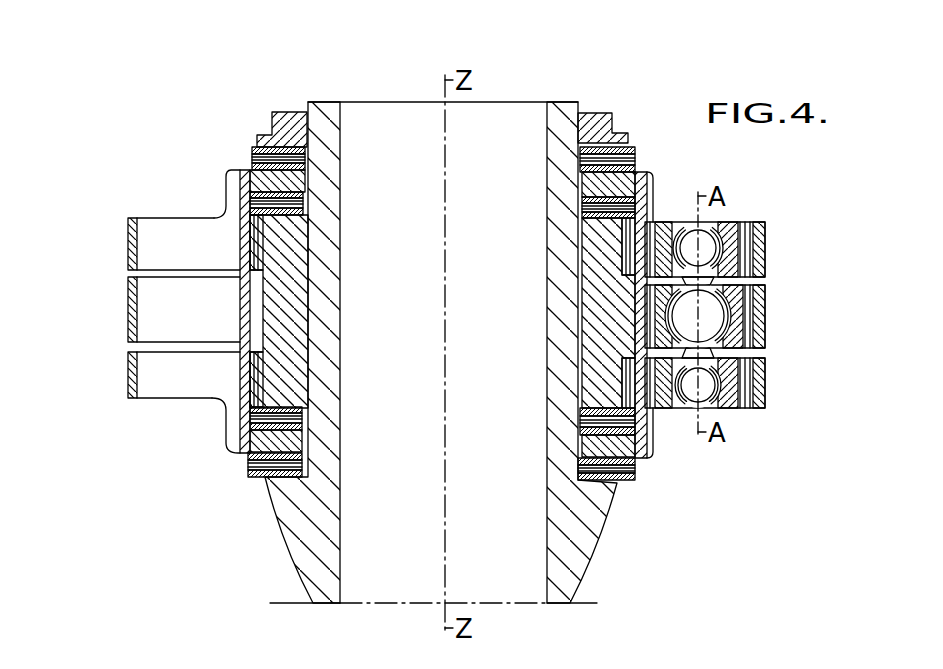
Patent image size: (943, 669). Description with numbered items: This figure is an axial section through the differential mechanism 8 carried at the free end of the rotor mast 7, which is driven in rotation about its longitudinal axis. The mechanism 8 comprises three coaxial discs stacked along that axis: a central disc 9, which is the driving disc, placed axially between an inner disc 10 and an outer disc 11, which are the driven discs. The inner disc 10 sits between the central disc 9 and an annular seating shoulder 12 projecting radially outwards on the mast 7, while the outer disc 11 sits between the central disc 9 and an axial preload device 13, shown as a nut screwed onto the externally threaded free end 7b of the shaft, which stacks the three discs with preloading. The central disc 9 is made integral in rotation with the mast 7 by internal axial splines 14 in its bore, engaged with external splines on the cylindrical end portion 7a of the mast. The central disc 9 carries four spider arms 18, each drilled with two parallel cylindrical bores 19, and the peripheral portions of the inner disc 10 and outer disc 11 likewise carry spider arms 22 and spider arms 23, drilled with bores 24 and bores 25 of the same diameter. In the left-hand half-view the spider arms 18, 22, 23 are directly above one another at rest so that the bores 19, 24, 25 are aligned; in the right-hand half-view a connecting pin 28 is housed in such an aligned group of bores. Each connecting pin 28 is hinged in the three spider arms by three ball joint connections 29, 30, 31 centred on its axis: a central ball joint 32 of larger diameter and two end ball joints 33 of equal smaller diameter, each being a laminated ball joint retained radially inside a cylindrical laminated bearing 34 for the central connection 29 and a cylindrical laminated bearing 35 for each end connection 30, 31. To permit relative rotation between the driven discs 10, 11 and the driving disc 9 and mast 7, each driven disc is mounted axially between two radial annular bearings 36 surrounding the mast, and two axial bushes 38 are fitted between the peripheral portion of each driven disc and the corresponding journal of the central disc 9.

The mast 7 is at (571, 352).
The cylindrical end portion 7a is at (545, 283).
The externally threaded free end 7b is at (562, 122).
The differential mechanism 8 is at (235, 167).
The central disc 9 is at (141, 299).
The inner disc 10 is at (222, 405).
The outer disc 11 is at (222, 205).
The seating shoulder 12 is at (290, 487).
The axial preload device 13 is at (268, 110).
The internal axial splines 14 is at (310, 270).
The spider arms 18 is at (128, 318).
The cylindrical bores 19 is at (165, 302).
The spider arms 22 is at (128, 372).
The spider arms 23 is at (130, 232).
The bores 24 is at (165, 380).
The bores 25 is at (175, 238).
The connecting pin 28 is at (726, 315).
The central ball joint connection 29 is at (740, 329).
The end ball joint connection 30 is at (733, 421).
The end ball joint connection 31 is at (752, 220).
The central ball joint 32 is at (720, 322).
The end ball joints 33 is at (690, 243).
The cylindrical laminated bearing 34 is at (750, 335).
The cylindrical laminated bearing 35 is at (745, 397).
The radial annular bearings 36 is at (628, 195).
The axial bushes 38 is at (258, 238).